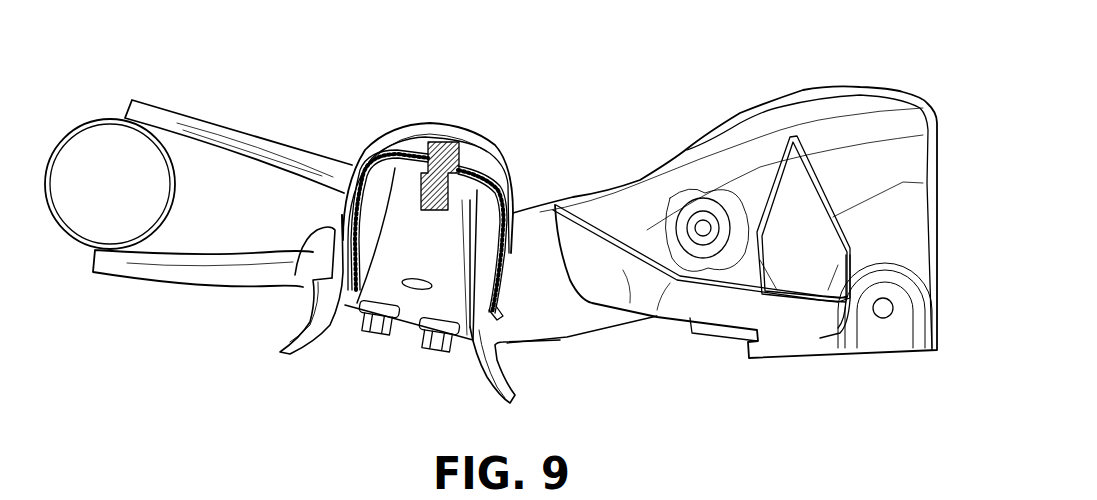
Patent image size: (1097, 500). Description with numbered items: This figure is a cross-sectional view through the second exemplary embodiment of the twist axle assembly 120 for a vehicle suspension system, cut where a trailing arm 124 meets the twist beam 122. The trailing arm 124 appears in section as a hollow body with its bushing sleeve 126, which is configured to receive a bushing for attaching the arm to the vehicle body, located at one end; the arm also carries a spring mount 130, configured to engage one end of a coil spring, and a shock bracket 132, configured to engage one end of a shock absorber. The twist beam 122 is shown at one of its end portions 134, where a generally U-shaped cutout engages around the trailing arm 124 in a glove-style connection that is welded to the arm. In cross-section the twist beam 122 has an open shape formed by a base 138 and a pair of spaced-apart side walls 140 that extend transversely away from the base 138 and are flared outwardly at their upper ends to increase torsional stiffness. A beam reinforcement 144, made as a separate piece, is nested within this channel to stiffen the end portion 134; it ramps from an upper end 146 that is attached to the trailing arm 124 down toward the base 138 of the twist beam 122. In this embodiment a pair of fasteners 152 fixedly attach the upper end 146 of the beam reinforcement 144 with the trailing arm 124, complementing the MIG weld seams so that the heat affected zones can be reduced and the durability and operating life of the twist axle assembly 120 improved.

The twist axle assembly 120 is at (837, 73).
The twist beam 122 is at (494, 141).
The trailing arm 124 is at (165, 288).
The bushing sleeve 126 is at (60, 142).
The spring mount 130 is at (797, 320).
The shock bracket 132 is at (900, 312).
The end portion 134 is at (413, 133).
The base 138 is at (407, 157).
The side wall 140 is at (295, 275).
The beam reinforcement 144 is at (507, 183).
The upper end 146 is at (352, 200).
The fastener 152 is at (437, 150).